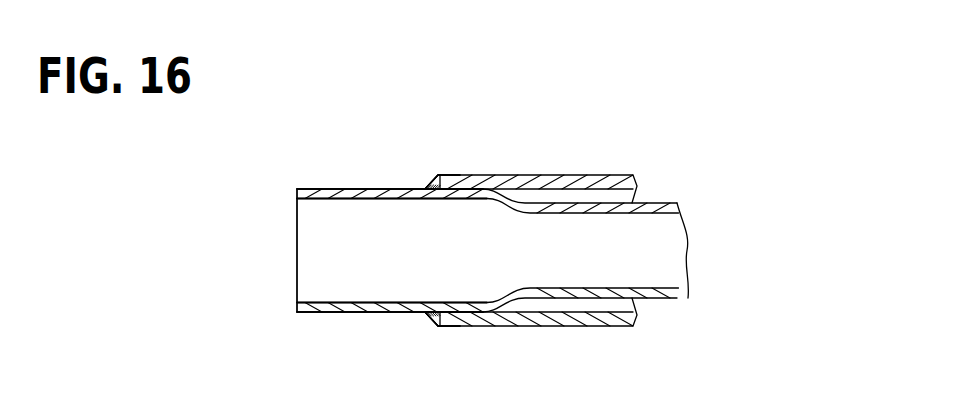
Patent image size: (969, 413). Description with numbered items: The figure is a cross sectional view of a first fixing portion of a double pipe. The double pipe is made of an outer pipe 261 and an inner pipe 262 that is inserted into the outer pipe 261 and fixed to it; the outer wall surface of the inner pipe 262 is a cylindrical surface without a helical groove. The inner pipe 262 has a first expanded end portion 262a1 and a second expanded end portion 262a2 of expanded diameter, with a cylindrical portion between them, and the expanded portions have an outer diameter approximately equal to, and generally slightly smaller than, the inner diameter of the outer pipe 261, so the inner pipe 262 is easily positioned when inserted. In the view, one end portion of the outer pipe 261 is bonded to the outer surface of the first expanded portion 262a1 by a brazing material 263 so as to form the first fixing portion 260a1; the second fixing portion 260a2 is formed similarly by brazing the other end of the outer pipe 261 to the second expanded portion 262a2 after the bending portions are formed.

The inner pipe 262 is at (665, 205).
The first expanded end portion 262a1 is at (335, 189).
The second expanded end portion 262a2 is at (366, 200).
The outer pipe 261 is at (583, 175).
The brazing material 263 is at (423, 187).
The first fixing portion 260a1 is at (440, 167).
The second fixing portion 260a2 is at (466, 191).